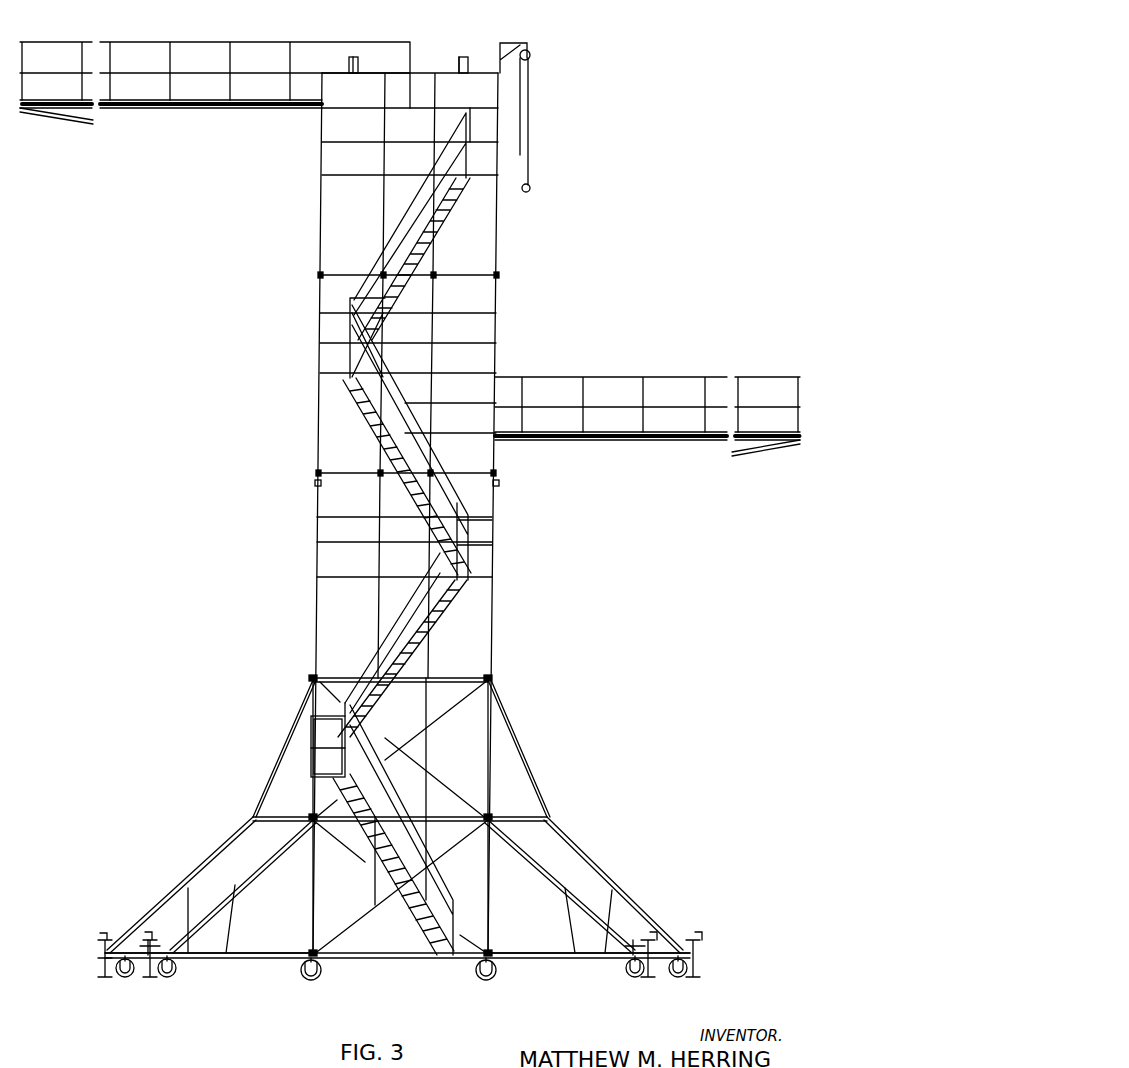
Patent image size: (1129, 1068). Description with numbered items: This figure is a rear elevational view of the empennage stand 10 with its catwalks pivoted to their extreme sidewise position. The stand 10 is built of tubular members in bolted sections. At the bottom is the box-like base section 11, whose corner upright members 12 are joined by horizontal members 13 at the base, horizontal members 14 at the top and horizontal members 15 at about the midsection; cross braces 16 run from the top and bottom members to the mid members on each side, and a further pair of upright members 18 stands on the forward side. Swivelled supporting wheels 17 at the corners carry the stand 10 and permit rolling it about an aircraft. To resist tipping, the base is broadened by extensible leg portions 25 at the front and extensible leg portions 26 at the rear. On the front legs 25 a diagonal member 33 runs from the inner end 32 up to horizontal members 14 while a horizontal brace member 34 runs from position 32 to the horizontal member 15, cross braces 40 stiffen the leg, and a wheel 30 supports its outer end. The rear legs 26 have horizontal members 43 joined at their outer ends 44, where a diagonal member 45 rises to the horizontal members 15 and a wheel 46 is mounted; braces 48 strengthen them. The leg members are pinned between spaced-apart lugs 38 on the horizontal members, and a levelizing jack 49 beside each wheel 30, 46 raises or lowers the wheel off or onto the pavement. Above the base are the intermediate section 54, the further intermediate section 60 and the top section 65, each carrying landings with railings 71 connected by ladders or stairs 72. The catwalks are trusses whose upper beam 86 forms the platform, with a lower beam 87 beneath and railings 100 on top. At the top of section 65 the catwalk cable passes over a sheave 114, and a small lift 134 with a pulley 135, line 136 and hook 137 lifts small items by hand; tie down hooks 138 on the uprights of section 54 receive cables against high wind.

The empennage stand 10 is at (312, 448).
The base section 11 is at (397, 814).
The upright members 12 is at (313, 890).
The horizontal members 13 is at (370, 958).
The horizontal members 14 is at (440, 678).
The horizontal members 15 is at (440, 822).
The cross braces 16 is at (448, 708).
The supporting wheel 17 is at (305, 979).
The upright members 18 is at (378, 624).
The extensible leg portions 25 is at (395, 816).
The extensible leg portions 26 is at (402, 885).
The wheel 30 is at (122, 977).
The inner end 32 is at (200, 868).
The diagonal member 33 is at (284, 745).
The horizontal brace member 34 is at (520, 826).
The lugs 38 is at (310, 678).
The cross braces 40 is at (398, 919).
The horizontal members 43 is at (262, 958).
The outer ends 44 is at (152, 945).
The diagonal member 45 is at (257, 872).
The wheel 46 is at (169, 977).
The braces 48 is at (238, 923).
The levelizing jack 49 is at (100, 943).
The intermediate section 54 is at (500, 583).
The further intermediate section 60 is at (503, 345).
The top section 65 is at (503, 232).
The railings 71 is at (497, 125).
The ladders or stairs 72 is at (445, 232).
The upper beam 86 is at (193, 110).
The lower beam 87 is at (85, 122).
The railings 100 is at (195, 42).
The sheave 114 is at (353, 57).
The small lift 134 is at (512, 43).
The pulley 135 is at (531, 53).
The line 136 is at (529, 116).
The hook 137 is at (531, 185).
The tie down hooks 138 is at (314, 483).